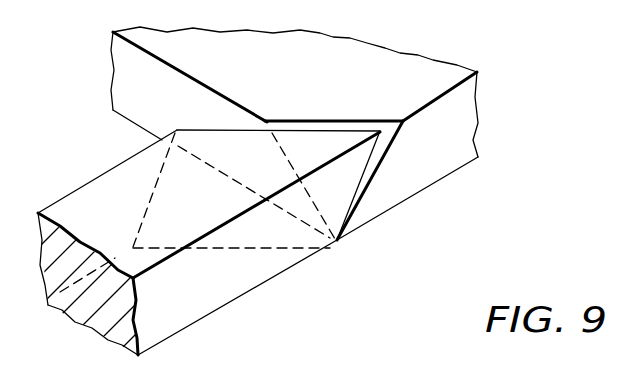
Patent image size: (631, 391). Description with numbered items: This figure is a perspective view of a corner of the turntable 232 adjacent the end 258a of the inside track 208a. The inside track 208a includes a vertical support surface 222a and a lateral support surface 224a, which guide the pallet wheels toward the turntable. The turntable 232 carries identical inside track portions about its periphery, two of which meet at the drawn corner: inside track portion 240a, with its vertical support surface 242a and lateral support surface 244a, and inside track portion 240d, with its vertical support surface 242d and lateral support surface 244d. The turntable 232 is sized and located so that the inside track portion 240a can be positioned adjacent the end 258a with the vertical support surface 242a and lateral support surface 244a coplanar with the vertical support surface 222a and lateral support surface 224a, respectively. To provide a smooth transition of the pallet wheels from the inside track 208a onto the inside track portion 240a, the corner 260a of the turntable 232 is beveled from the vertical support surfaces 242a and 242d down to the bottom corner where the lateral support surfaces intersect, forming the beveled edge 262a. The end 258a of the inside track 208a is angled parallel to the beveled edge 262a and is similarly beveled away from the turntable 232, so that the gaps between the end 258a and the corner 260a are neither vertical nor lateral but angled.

The turntable 232 is at (383, 66).
The vertical support surface 242d is at (268, 67).
The lateral support surface 244d is at (175, 105).
The inside track portion 240d is at (130, 127).
The beveled edge 262a is at (311, 120).
The vertical support surface 242a is at (452, 80).
The lateral support surface 244a is at (455, 156).
The inside track portion 240a is at (438, 183).
The corner 260a is at (342, 250).
The end 258a is at (312, 143).
The vertical support surface 222a is at (127, 219).
The lateral support surface 224a is at (208, 306).
The inside track 208a is at (239, 300).